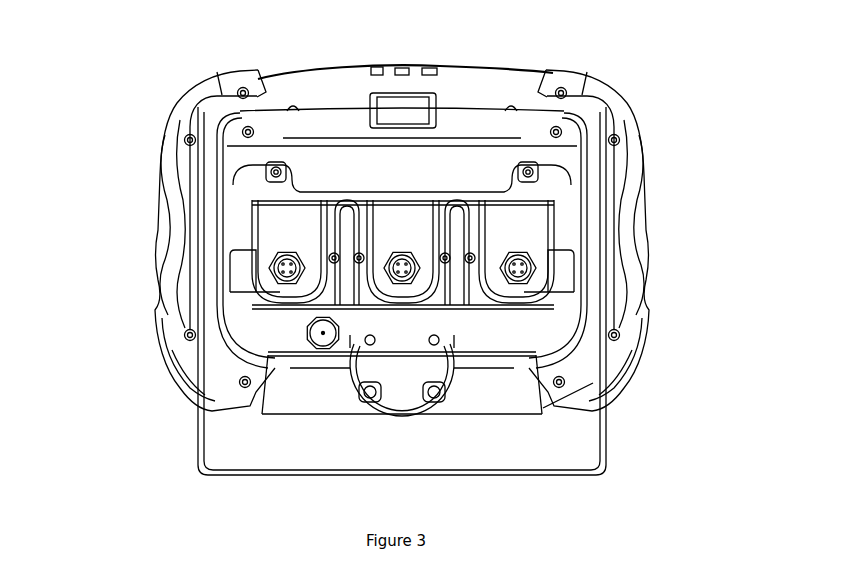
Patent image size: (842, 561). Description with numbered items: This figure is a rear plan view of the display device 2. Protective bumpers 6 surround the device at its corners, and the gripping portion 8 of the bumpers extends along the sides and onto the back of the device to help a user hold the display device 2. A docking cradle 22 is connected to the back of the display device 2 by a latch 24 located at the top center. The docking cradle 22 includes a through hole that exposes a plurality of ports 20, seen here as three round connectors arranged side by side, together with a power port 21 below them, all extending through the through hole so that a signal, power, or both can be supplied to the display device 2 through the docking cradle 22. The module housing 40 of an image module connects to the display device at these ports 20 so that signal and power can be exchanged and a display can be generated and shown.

The display device 2 is at (682, 74).
The protective bumpers 6 is at (188, 97).
The gripping portion 8 is at (662, 297).
The ports 20 is at (546, 213).
The power port 21 is at (323, 334).
The docking cradle 22 is at (545, 322).
The latch 24 is at (390, 103).
The module housing 40 is at (340, 307).